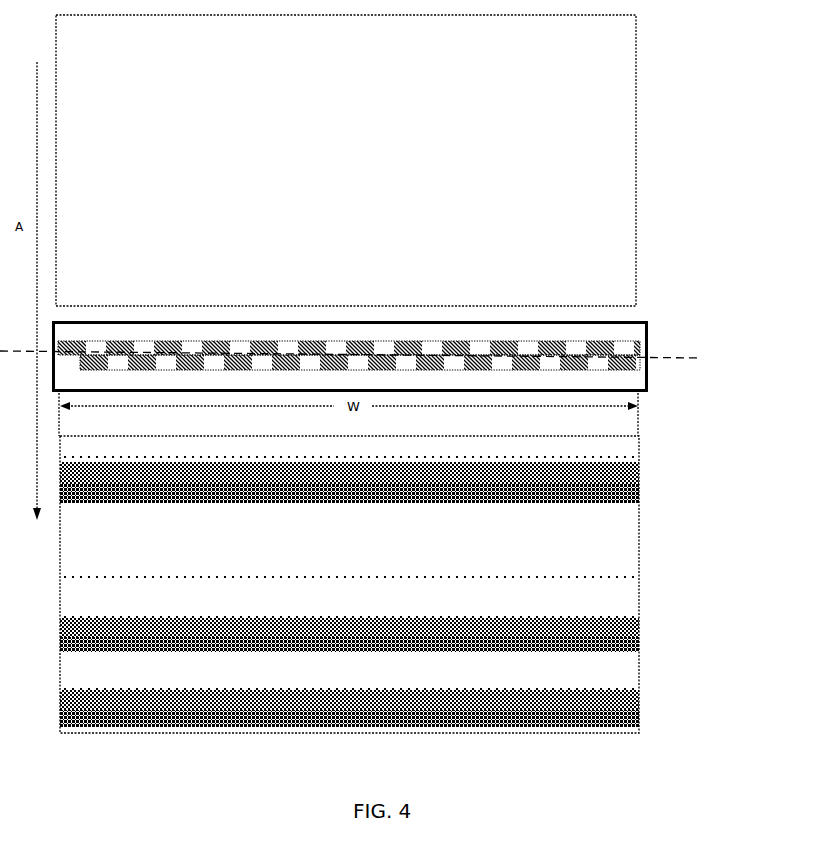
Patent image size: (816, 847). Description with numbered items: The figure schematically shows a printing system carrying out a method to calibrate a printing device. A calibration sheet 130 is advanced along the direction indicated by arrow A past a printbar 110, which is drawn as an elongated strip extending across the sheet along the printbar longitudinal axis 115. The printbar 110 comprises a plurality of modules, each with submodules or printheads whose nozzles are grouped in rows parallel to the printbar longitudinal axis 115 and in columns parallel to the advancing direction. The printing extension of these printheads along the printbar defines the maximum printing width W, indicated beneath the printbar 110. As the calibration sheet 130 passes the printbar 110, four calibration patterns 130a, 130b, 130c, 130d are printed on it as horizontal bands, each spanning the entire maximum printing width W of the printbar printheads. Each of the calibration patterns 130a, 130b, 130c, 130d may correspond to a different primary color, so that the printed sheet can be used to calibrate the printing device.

The printbar 110 is at (648, 322).
The printbar longitudinal axis 115 is at (668, 357).
The calibration sheet 130 is at (375, 166).
The calibration pattern 130a is at (639, 497).
The calibration pattern 130b is at (639, 573).
The calibration pattern 130c is at (639, 640).
The calibration pattern 130d is at (639, 718).